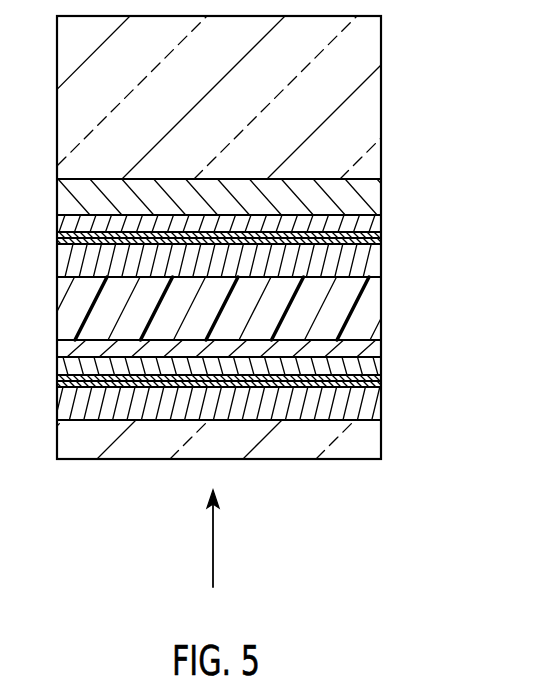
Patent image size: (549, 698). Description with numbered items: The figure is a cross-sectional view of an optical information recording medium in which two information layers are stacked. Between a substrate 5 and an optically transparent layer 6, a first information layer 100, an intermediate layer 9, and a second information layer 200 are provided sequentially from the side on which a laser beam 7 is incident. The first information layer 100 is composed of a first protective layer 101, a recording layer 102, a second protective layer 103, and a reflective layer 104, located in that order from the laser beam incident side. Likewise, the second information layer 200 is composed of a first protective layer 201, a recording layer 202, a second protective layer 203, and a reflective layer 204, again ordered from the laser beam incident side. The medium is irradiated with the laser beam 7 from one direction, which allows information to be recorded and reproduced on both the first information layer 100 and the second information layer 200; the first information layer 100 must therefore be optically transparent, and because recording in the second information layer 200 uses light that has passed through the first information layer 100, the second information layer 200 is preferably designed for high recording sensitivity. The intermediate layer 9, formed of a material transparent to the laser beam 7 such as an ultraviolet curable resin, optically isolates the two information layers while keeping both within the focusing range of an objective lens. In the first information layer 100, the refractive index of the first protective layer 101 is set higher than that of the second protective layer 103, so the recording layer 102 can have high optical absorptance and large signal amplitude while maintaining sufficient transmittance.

The substrate 5 is at (368, 63).
The reflective layer 204 is at (367, 197).
The second protective layer 203 is at (367, 222).
The recording layer 202 is at (366, 242).
The first protective layer 201 is at (258, 266).
The second information layer 200 is at (269, 233).
The intermediate layer 9 is at (365, 303).
The reflective layer 104 is at (365, 342).
The second protective layer 103 is at (365, 363).
The recording layer 102 is at (365, 384).
The first protective layer 101 is at (254, 406).
The first information layer 100 is at (283, 374).
The optically transparent layer 6 is at (365, 443).
The laser beam 7 is at (213, 537).